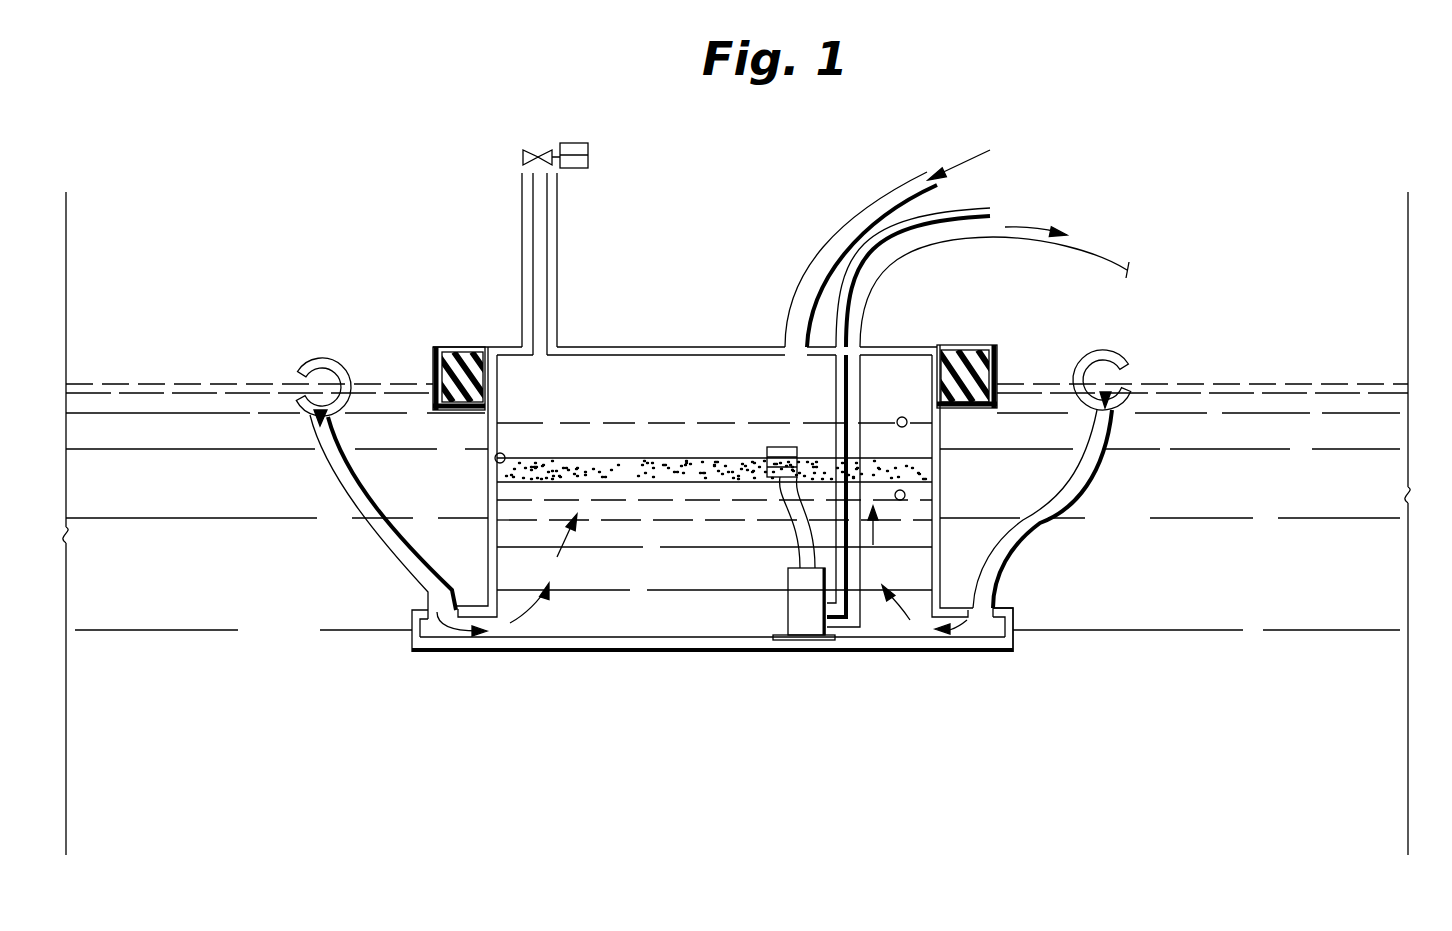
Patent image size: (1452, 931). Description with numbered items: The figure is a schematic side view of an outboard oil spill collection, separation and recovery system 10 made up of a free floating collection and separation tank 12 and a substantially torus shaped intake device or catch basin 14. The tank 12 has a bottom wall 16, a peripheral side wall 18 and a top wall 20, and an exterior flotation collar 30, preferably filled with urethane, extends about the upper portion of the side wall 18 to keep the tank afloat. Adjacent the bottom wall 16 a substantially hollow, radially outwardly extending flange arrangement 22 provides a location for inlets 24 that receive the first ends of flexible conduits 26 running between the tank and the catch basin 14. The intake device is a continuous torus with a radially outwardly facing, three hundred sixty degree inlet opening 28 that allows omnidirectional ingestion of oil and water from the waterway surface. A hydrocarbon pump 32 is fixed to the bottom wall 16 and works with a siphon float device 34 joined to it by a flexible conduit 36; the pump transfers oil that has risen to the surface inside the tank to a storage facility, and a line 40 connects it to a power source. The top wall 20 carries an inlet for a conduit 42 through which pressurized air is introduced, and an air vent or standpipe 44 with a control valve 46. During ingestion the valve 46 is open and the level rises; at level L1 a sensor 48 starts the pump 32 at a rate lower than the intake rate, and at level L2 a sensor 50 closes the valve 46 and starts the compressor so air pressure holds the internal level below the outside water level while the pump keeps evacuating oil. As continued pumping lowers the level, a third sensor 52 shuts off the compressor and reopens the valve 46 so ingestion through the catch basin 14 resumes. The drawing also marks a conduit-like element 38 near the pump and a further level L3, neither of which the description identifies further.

The oil spill collection, separation and recovery system 10 is at (262, 644).
The collection and separation tank 12 is at (944, 534).
The intake device or catch basin 14 is at (345, 351).
The bottom wall 16 is at (603, 652).
The peripheral side wall 18 is at (488, 462).
The top wall 20 is at (717, 346).
The flange arrangement 22 is at (1013, 627).
The inlets 24 is at (450, 612).
The flexible conduits 26 is at (327, 480).
The inlet opening 28 is at (310, 377).
The exterior flotation collar 30 is at (978, 346).
The hydrocarbon pump 32 is at (808, 628).
The siphon float device 34 is at (780, 447).
The flexible conduit 36 is at (788, 488).
The discharge conduit 38 is at (946, 214).
The line 40 is at (1053, 240).
The conduit 42 is at (846, 231).
The air vent or standpipe 44 is at (546, 244).
The control valve 46 is at (540, 155).
The sensor 48 is at (900, 501).
The sensor 50 is at (908, 424).
The third sensor 52 is at (492, 470).
The level L1 is at (563, 497).
The level L2 is at (646, 480).
The upper liquid level L3 is at (548, 423).